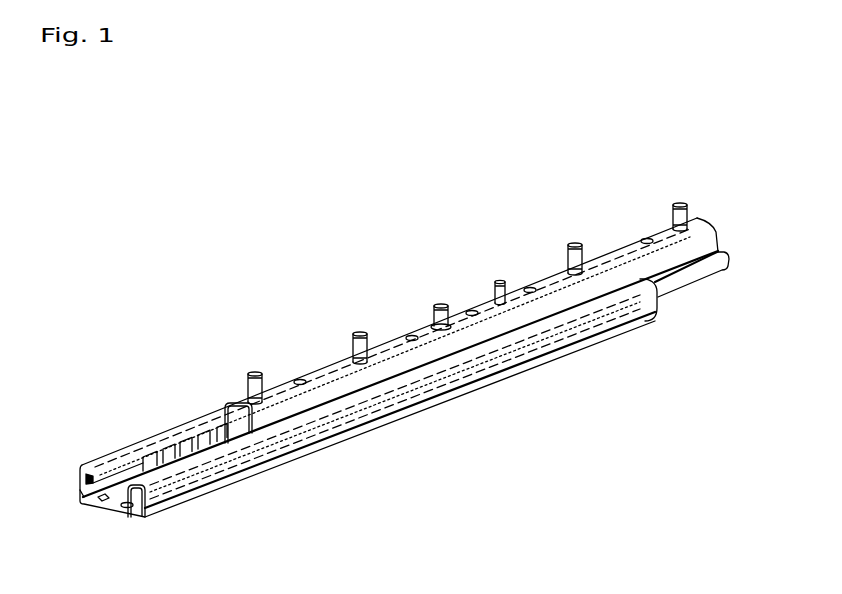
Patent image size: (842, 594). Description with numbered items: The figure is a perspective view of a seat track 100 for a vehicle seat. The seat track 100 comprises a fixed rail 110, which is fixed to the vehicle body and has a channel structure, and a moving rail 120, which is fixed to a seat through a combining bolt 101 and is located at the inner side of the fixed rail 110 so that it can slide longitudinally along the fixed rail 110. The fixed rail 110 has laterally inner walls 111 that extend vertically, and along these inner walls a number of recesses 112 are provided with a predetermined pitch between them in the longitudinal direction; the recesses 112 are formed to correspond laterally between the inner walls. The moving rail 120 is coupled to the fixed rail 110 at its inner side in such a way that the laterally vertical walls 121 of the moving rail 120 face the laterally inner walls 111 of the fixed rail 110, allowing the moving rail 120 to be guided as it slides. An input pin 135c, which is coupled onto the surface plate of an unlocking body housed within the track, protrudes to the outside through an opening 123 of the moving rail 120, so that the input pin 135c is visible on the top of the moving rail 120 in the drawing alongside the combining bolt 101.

The seat track 100 is at (191, 115).
The combining bolt 101 is at (257, 370).
The fixed rail 110 is at (130, 452).
The laterally inner walls 111 is at (92, 500).
The recesses 112 is at (173, 446).
The moving rail 120 is at (328, 363).
The laterally vertical walls 121 is at (229, 404).
The opening 123 is at (434, 324).
The input pin 135c is at (439, 304).